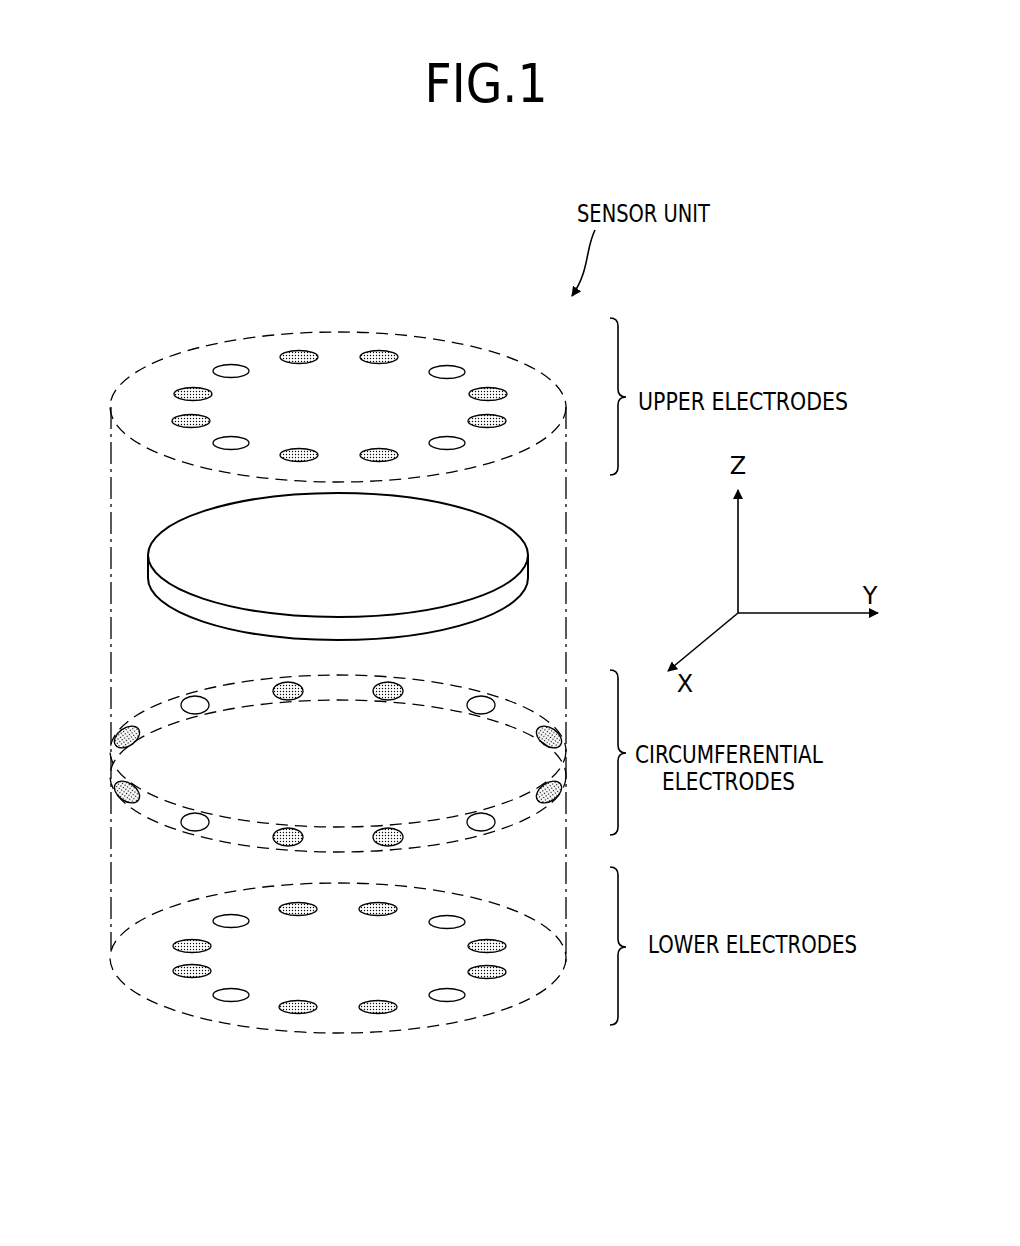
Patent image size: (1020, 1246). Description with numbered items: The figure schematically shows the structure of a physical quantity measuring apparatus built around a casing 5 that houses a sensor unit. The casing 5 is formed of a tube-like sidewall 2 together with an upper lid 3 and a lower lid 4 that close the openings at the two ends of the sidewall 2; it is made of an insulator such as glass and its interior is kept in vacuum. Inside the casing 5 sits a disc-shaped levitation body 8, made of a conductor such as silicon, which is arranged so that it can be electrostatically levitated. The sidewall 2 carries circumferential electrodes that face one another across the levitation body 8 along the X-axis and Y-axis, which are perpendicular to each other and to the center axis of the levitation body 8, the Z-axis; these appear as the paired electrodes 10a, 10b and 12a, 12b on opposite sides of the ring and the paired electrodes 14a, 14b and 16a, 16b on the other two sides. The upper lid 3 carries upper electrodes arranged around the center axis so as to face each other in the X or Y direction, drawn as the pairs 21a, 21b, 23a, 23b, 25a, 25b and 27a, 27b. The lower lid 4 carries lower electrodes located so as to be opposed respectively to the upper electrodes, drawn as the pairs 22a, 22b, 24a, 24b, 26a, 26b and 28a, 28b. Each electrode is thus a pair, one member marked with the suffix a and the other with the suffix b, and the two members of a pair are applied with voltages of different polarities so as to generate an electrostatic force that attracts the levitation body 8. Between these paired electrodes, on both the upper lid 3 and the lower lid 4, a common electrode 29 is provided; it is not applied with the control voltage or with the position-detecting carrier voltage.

The sidewall 2 is at (525, 720).
The upper lid 3 is at (437, 346).
The lower lid 4 is at (428, 1017).
The casing 5 is at (110, 620).
The levitation body 8 is at (520, 560).
The circumferential electrode 10a is at (102, 736).
The circumferential electrode 10b is at (102, 792).
The circumferential electrode 12a is at (574, 737).
The circumferential electrode 12b is at (574, 792).
The circumferential electrode 14a is at (379, 708).
The circumferential electrode 14b is at (296, 708).
The circumferential electrode 16a is at (379, 820).
The circumferential electrode 16b is at (296, 820).
The upper electrode 21a is at (192, 389).
The upper electrode 21b is at (169, 420).
The upper electrode 23a is at (378, 333).
The upper electrode 23b is at (298, 333).
The upper electrode 25a is at (509, 385).
The upper electrode 25b is at (509, 423).
The upper electrode 27a is at (378, 441).
The upper electrode 27b is at (297, 441).
The lower electrode 22a is at (169, 944).
The lower electrode 22b is at (175, 972).
The lower electrode 24a is at (377, 925).
The lower electrode 24b is at (298, 925).
The lower electrode 26a is at (509, 936).
The lower electrode 26b is at (509, 976).
The lower electrode 28a is at (377, 990).
The lower electrode 28b is at (298, 991).
The common electrode 29 is at (231, 368).